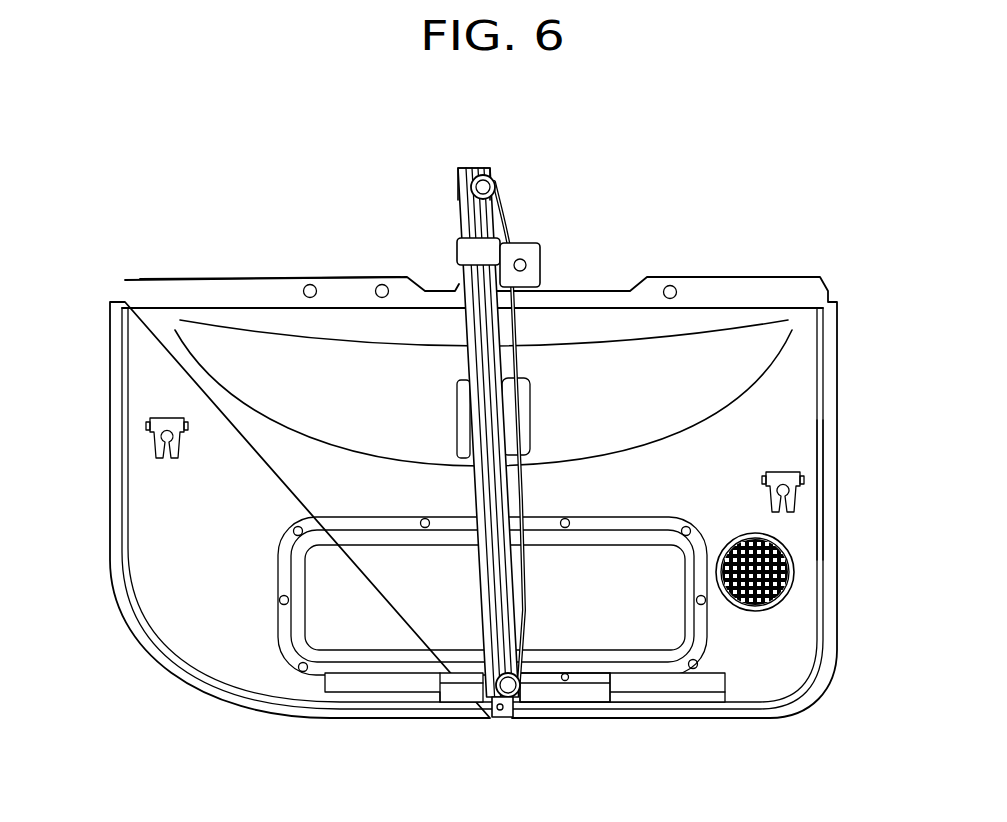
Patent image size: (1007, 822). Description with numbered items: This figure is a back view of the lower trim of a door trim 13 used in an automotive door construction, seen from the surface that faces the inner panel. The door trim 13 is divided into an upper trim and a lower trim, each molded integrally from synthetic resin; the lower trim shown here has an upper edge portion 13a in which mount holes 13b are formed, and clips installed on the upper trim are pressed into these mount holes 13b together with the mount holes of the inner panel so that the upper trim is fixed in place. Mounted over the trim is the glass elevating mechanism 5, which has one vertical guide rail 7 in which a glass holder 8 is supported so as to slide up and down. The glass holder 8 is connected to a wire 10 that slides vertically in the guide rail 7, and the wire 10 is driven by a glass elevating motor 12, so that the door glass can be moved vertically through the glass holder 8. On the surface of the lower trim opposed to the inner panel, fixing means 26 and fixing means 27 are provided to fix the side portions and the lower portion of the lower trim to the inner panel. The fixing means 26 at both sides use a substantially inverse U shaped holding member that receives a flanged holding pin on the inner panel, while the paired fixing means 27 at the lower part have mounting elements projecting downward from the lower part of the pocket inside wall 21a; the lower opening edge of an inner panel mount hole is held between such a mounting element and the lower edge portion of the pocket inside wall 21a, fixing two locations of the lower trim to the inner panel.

The glass elevating mechanism 5 is at (450, 185).
The guide rail 7 is at (470, 168).
The glass holder 8 is at (457, 250).
The wire 10 is at (500, 222).
The glass elevating motor 12 is at (530, 412).
The door trim 13 is at (182, 572).
The upper edge portion 13a is at (222, 290).
The mount holes 13b is at (310, 284).
The pocket inside wall 21a is at (322, 637).
The fixing means 26 is at (832, 477).
The fixing means 27 is at (745, 687).